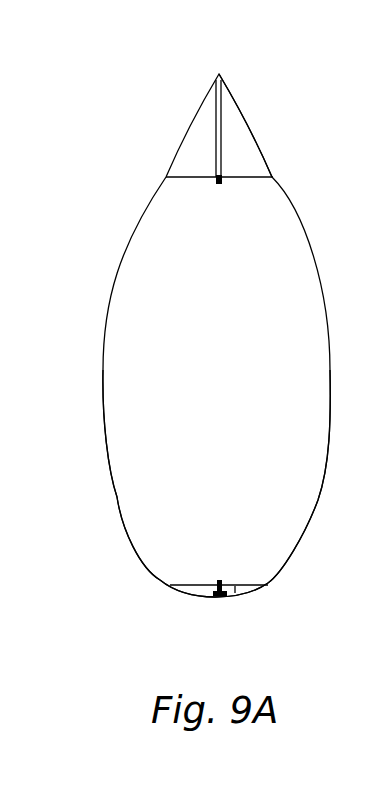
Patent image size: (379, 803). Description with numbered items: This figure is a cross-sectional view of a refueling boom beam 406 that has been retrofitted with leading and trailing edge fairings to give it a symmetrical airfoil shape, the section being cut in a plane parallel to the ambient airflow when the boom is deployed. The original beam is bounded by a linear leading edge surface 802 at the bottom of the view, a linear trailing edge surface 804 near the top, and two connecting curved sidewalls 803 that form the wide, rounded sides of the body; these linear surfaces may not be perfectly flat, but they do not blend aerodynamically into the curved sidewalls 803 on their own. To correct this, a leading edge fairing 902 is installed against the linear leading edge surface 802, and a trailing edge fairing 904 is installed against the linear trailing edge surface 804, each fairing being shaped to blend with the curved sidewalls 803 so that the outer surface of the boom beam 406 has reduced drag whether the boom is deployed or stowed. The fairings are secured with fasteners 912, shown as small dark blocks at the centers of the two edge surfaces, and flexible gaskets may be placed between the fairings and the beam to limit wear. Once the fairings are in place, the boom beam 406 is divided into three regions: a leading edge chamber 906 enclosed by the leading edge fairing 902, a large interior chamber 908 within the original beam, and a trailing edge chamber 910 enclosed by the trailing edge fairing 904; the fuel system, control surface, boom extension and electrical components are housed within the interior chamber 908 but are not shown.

The boom beam 406 is at (177, 361).
The interior chamber 908 is at (240, 400).
The trailing edge fairing 904 is at (250, 136).
The trailing edge chamber 910 is at (261, 173).
The linear trailing edge surface 804 is at (205, 180).
The fastener 912 is at (222, 181).
The curved sidewall 803 is at (117, 497).
The linear leading edge surface 802 is at (242, 587).
The leading edge fairing 902 is at (245, 594).
The leading edge chamber 906 is at (235, 588).